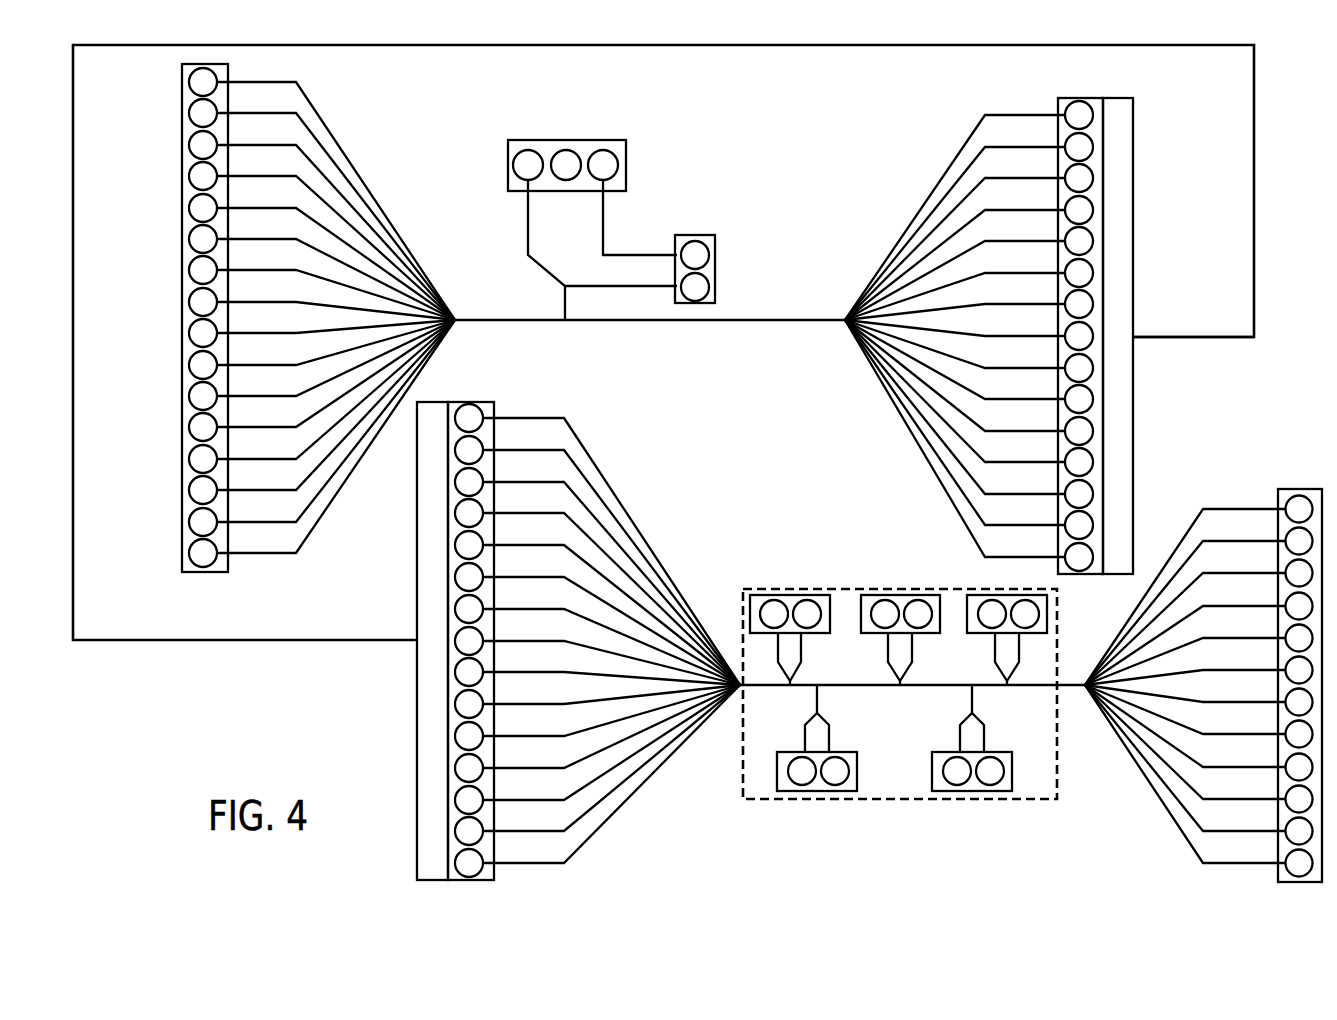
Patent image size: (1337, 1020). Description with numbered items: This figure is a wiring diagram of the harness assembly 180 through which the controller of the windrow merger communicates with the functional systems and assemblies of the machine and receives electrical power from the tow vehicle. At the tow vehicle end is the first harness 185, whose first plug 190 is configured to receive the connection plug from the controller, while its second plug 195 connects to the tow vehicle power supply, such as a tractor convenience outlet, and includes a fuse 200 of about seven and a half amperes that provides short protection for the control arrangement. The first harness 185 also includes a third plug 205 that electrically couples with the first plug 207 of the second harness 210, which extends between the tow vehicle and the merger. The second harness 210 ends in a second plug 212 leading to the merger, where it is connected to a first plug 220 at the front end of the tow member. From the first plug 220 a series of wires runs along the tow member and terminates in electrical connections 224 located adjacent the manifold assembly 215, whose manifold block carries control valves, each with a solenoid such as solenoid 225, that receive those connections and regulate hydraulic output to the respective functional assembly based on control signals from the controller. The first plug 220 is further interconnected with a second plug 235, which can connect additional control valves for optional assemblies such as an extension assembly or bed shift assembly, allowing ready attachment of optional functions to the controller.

The harness assembly 180 is at (133, 378).
The first harness 185 is at (780, 153).
The first plug 190 is at (188, 129).
The second plug 195 is at (650, 163).
The fuse 200 is at (697, 233).
The third plug 205 is at (1095, 96).
The first plug of second harness 207 is at (1120, 167).
The second harness 210 is at (1210, 350).
The second plug of second harness 212 is at (427, 457).
The manifold assembly 215 is at (747, 530).
The first plug 220 is at (455, 848).
The electrical connections 224 is at (1003, 590).
The solenoid 225 is at (1062, 637).
The second plug 235 is at (1287, 489).